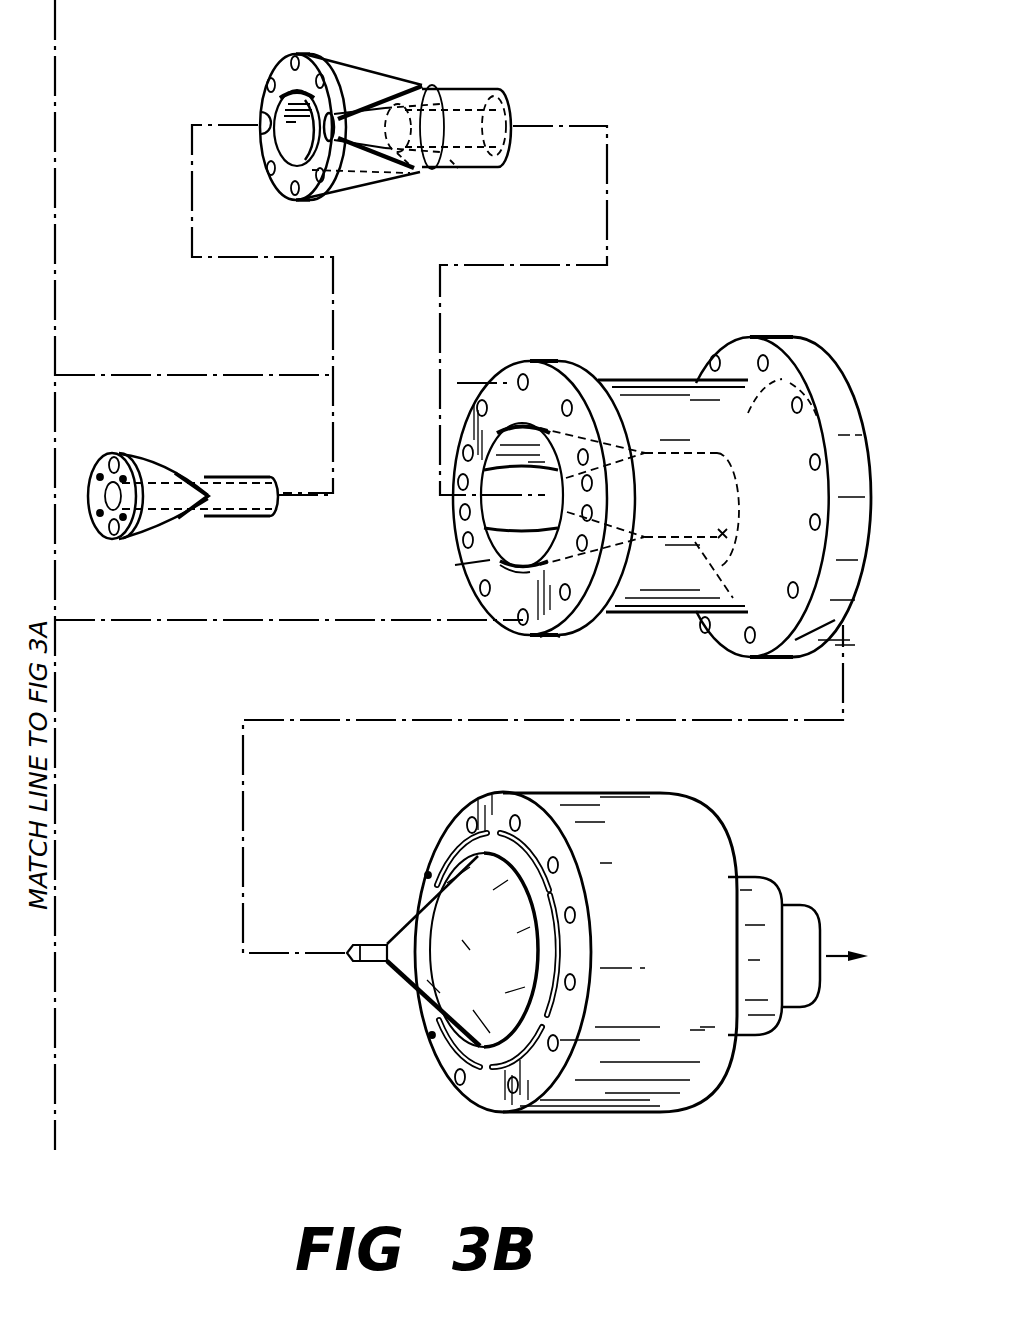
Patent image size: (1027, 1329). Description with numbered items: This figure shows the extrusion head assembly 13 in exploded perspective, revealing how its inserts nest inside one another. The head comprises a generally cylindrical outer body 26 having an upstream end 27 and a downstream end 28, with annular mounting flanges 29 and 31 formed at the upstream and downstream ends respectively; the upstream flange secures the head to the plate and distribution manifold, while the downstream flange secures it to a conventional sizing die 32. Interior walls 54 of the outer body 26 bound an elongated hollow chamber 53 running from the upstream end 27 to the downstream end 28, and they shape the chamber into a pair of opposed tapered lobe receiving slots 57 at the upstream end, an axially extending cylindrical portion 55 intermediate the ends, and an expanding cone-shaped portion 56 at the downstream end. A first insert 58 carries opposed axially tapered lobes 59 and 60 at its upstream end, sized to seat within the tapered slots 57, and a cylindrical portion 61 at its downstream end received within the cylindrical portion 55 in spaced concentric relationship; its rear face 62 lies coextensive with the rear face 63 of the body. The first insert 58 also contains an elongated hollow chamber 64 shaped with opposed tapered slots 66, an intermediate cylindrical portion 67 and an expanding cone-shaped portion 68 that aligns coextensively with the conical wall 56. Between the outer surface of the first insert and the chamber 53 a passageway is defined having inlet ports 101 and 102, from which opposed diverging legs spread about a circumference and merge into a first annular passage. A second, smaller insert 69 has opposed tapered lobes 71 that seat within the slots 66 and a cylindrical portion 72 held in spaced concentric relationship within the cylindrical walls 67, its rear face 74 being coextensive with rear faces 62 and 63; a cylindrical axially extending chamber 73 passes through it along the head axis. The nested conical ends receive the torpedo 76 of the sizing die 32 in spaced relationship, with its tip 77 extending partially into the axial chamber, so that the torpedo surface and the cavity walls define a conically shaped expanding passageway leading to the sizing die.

The extrusion head assembly 13 is at (700, 102).
The outer body 26 is at (641, 388).
The upstream end 27 is at (562, 348).
The downstream end 28 is at (710, 334).
The annular mounting flange 29 is at (556, 636).
The annular mounting flange 31 is at (798, 650).
The sizing die 32 is at (613, 1110).
The elongated hollow chamber 53 is at (500, 580).
The interior walls 54 is at (522, 440).
The cylindrical portion 55 is at (729, 560).
The cone-shaped portion 56 is at (690, 450).
The tapered lobe receiving slots 57 is at (626, 420).
The first insert 58 is at (395, 47).
The tapered lobe 59 is at (350, 180).
The tapered lobe 60 is at (327, 62).
The cylindrical portion 61 is at (453, 88).
The rear face 62 is at (278, 74).
The rear face 63 is at (462, 568).
The elongated hollow chamber 64 is at (272, 150).
The tapered slots 66 is at (403, 172).
The cylindrical portion 67 is at (455, 168).
The cone-shaped portion 68 is at (492, 107).
The second insert 69 is at (204, 450).
The tapered lobes 71 is at (147, 472).
The cylindrical portion 72 is at (238, 500).
The axially extending chamber 73 is at (104, 530).
The rear face 74 is at (104, 468).
The torpedo 76 is at (432, 1015).
The tip 77 is at (370, 945).
The inlet port 101 is at (258, 134).
The inlet port 102 is at (347, 112).